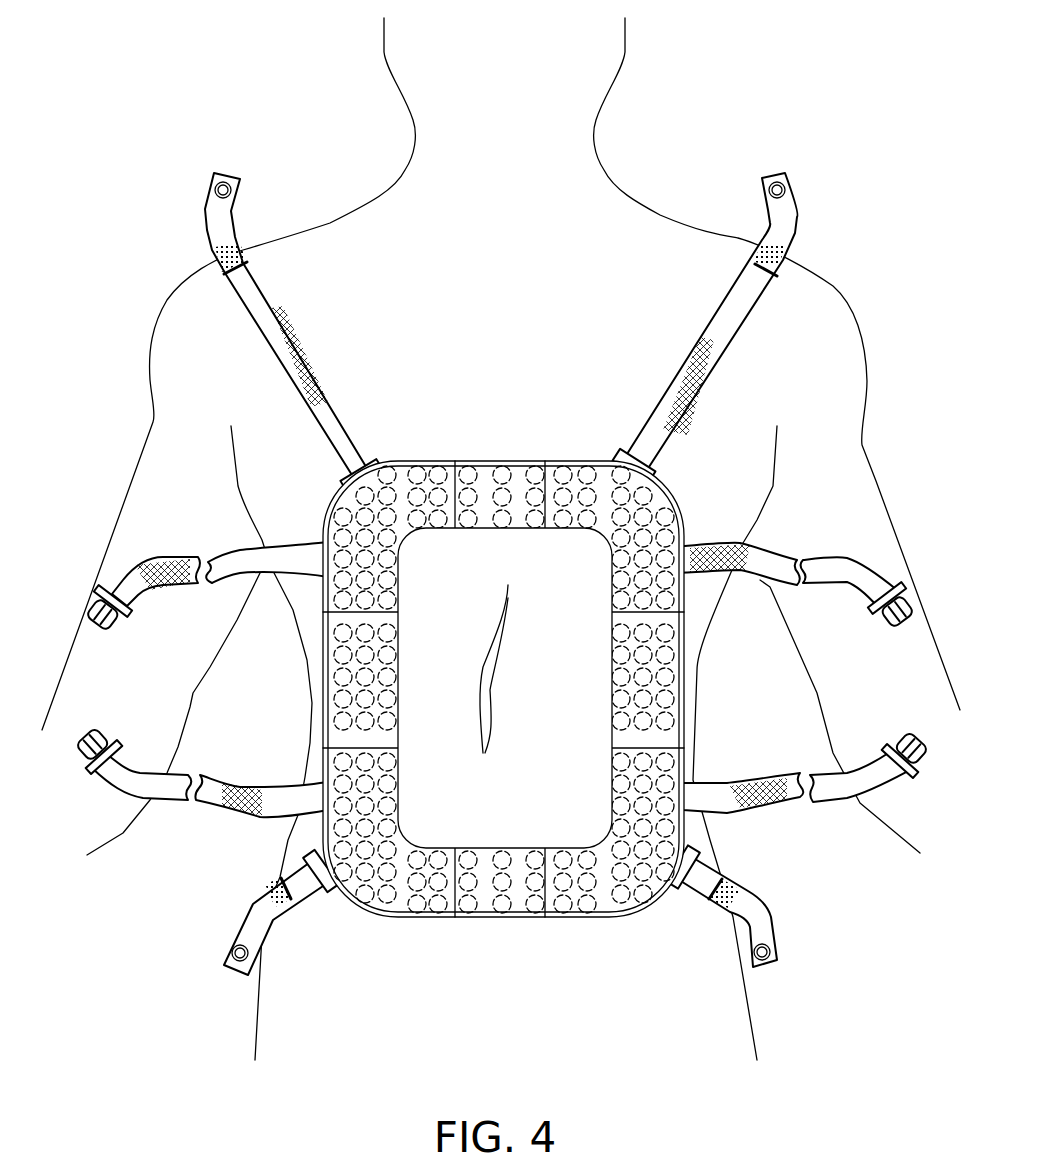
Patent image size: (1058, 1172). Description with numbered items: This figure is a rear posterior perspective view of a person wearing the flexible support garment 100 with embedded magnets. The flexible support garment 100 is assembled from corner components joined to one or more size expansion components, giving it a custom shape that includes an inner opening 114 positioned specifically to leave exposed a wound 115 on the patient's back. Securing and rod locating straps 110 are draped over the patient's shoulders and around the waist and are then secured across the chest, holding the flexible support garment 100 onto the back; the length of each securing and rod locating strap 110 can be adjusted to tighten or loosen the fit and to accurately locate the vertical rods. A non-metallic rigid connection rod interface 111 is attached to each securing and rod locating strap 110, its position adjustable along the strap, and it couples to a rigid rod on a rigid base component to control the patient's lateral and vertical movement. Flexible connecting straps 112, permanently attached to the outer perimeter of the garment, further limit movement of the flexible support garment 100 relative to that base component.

The flexible support garment 100 is at (553, 396).
The securing and rod locating strap 110 is at (282, 353).
The non-metallic rigid connection rod interface 111 is at (224, 175).
The flexible connecting strap 112 is at (158, 587).
The inner opening 114 is at (515, 785).
The wound 115 is at (497, 685).